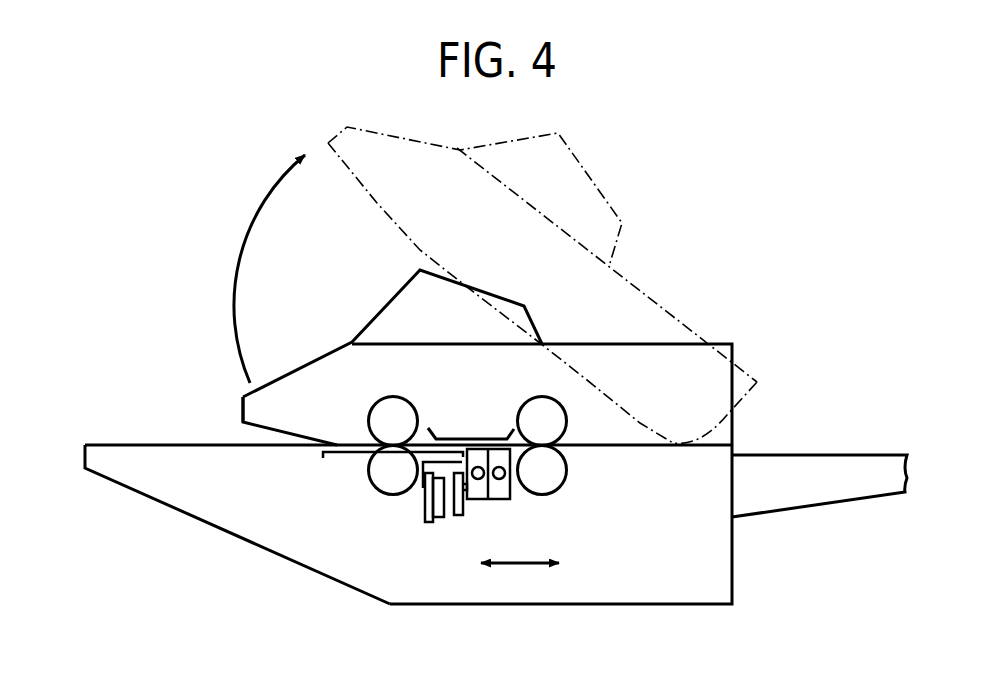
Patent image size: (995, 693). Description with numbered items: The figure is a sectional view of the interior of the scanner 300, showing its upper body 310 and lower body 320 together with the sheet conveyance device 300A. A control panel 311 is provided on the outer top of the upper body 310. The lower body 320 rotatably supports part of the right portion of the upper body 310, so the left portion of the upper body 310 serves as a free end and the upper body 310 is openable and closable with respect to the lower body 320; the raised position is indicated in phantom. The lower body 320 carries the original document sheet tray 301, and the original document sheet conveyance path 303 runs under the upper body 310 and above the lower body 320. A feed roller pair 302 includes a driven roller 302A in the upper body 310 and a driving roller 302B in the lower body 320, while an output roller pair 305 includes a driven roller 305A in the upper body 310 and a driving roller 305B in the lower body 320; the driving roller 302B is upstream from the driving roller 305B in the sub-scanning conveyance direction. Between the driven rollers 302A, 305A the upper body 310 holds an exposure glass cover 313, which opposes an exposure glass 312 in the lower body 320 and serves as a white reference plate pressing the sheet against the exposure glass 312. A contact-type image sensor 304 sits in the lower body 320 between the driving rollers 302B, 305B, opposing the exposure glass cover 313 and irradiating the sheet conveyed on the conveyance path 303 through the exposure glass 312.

The scanner 300 is at (751, 118).
The sheet conveyance device 300A is at (386, 385).
The original document sheet tray 301 is at (136, 443).
The feed roller pair 302 is at (376, 437).
The driven roller 302A is at (370, 410).
The driving roller 302B is at (370, 478).
The original document sheet conveyance path 303 is at (622, 449).
The contact-type image sensor 304 is at (488, 501).
The output roller pair 305 is at (557, 435).
The driven roller 305A is at (563, 420).
The driving roller 305B is at (564, 484).
The upper body 310 is at (608, 159).
The control panel 311 is at (390, 302).
The exposure glass 312 is at (495, 450).
The exposure glass cover 313 is at (460, 437).
The lower body 320 is at (673, 616).